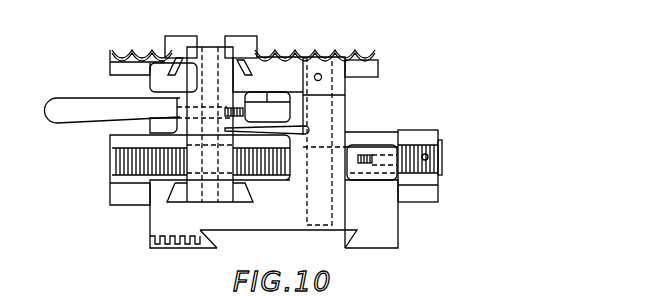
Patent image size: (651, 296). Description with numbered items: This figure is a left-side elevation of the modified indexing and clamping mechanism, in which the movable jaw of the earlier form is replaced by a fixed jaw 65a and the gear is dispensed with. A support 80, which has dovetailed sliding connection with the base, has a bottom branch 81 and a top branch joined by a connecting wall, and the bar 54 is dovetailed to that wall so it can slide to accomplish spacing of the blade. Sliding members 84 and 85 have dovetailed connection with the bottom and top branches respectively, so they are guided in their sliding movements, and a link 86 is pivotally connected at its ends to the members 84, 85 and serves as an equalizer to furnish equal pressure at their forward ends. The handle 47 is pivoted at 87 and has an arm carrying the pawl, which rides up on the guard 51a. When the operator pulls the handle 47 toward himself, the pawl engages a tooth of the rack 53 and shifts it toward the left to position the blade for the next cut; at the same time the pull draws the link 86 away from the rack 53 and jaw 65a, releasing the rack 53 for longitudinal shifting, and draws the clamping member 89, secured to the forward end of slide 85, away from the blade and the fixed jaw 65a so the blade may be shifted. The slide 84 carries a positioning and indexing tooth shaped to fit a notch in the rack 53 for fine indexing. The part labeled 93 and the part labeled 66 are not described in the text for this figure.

The handle 47 is at (62, 115).
The fixed jaw 65a is at (172, 40).
The sliding member 85 is at (223, 46).
The link 86 is at (212, 83).
The rounded block 93 is at (270, 107).
The right jaw block 66 is at (372, 68).
The pivot 87 is at (320, 198).
The guard 51a is at (352, 146).
The bar 54 is at (430, 132).
The rack 53 is at (443, 147).
The clamping member 89 is at (428, 157).
The support 80 is at (390, 225).
The sliding member 84 is at (228, 197).
The bottom branch 81 is at (157, 217).